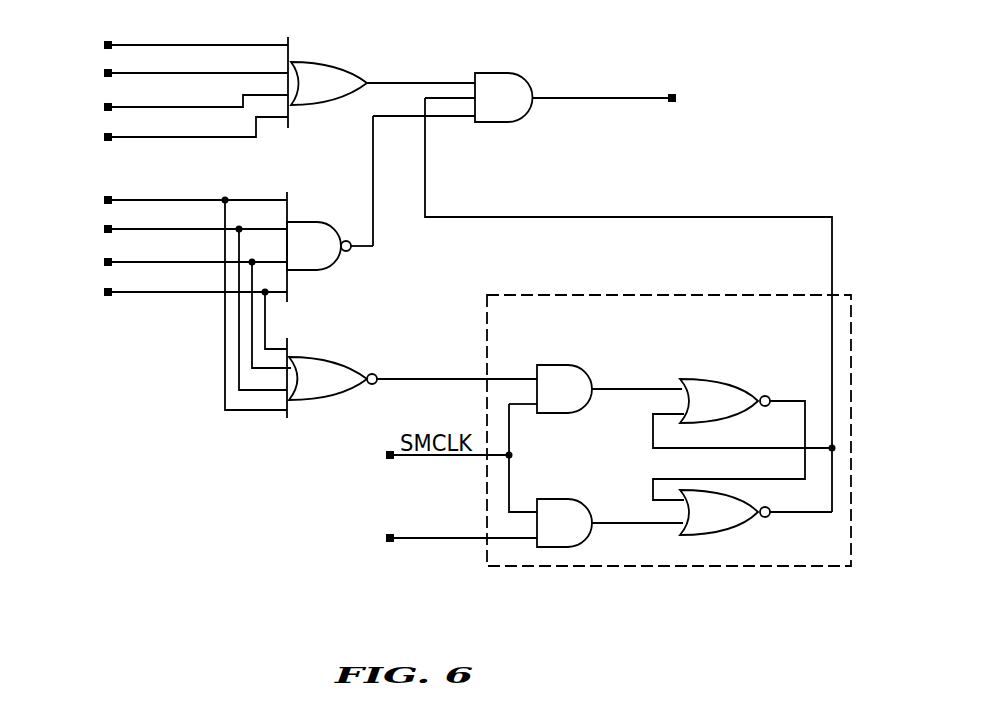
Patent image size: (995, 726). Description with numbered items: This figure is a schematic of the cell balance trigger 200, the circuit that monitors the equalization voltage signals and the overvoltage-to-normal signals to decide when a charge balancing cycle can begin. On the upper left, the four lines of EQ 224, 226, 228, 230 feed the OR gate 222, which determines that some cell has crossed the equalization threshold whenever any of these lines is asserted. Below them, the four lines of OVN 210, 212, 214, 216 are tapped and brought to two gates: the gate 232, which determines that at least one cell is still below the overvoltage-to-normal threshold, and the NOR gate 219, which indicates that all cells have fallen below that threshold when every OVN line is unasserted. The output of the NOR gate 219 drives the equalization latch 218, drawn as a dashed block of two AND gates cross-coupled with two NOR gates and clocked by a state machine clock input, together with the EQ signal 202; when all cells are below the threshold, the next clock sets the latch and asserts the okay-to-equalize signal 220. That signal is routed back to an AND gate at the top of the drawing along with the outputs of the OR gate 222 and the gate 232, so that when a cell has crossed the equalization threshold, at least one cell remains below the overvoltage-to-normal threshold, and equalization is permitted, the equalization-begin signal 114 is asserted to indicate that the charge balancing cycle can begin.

The EQ line 230 is at (104, 46).
The EQ line 228 is at (104, 74).
The EQ line 226 is at (104, 108).
The EQ line 224 is at (104, 138).
The OR gate 222 is at (335, 73).
The EQBEG signal 114 is at (674, 102).
The OVN line 216 is at (104, 201).
The OVN line 214 is at (104, 230).
The OVN line 212 is at (104, 263).
The OVN line 210 is at (104, 293).
The gate 232 is at (327, 255).
The NOR gate 219 is at (337, 377).
The OK_TO_EQ signal 220 is at (620, 217).
The equalization latch 218 is at (677, 338).
The EQ signal 202 is at (405, 537).
The cell balance trigger 200 is at (236, 481).